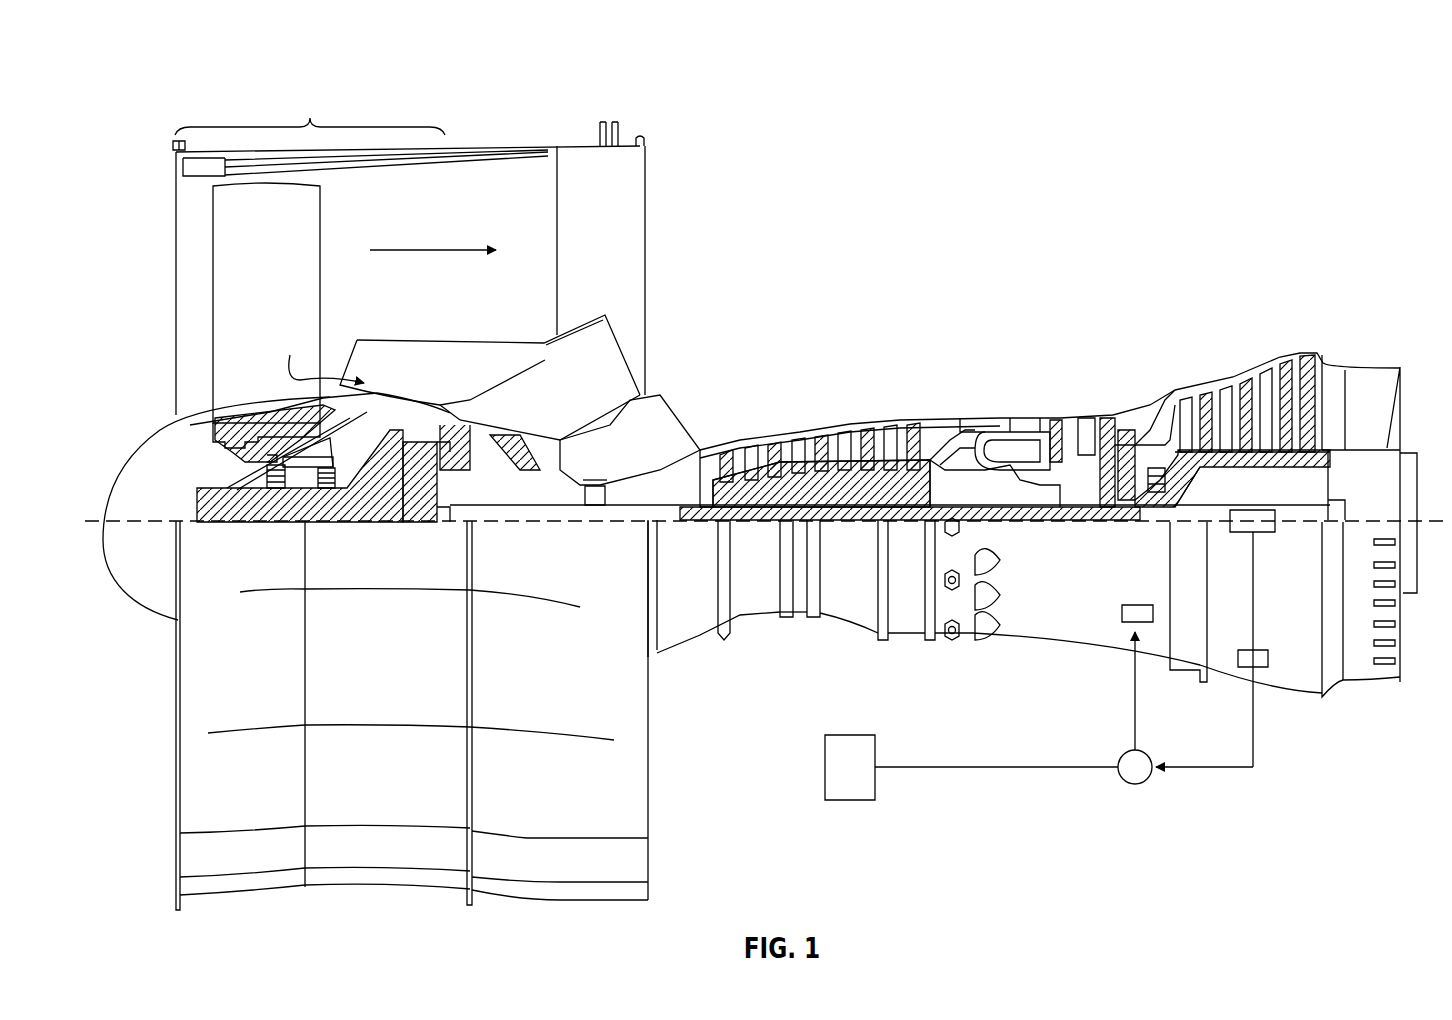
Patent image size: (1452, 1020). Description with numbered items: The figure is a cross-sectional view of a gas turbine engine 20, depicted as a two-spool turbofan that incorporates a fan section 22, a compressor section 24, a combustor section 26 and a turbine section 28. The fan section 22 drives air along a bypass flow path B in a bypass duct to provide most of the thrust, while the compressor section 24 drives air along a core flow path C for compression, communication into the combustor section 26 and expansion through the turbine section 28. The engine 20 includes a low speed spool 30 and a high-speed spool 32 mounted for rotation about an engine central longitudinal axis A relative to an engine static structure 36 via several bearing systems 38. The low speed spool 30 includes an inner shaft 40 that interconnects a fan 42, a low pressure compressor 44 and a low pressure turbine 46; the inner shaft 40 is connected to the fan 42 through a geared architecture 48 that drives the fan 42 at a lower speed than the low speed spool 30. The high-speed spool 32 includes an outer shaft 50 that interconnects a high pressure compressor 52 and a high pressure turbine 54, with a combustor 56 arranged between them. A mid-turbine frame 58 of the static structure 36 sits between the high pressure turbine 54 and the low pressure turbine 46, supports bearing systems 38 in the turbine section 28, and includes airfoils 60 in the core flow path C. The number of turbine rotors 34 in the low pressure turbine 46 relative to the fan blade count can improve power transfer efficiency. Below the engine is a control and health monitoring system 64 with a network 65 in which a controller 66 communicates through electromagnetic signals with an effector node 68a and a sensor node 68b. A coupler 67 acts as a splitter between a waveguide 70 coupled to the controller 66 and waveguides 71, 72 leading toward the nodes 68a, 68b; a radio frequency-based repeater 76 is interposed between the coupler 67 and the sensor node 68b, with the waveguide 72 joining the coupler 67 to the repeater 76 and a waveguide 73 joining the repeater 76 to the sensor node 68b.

The gas turbine engine 20 is at (1224, 186).
The fan section 22 is at (310, 110).
The compressor section 24 is at (842, 382).
The combustor section 26 is at (1005, 328).
The turbine section 28 is at (1176, 328).
The low speed spool 30 is at (870, 528).
The high-speed spool 32 is at (925, 470).
The turbine rotors 34 is at (1200, 469).
The engine static structure 36 is at (908, 642).
The bearing systems 38 is at (273, 484).
The inner shaft 40 is at (663, 512).
The fan 42 is at (292, 276).
The low pressure compressor 44 is at (566, 400).
The low pressure turbine 46 is at (1257, 376).
The geared architecture 48 is at (410, 484).
The outer shaft 50 is at (1040, 500).
The high pressure compressor 52 is at (803, 480).
The high pressure turbine 54 is at (1093, 415).
The combustor 56 is at (1015, 440).
The mid-turbine frame 58 is at (1140, 400).
The airfoils 60 is at (1137, 430).
The control and health monitoring system 64 is at (1176, 808).
The network 65 is at (1321, 790).
The controller 66 is at (832, 753).
The coupler 67 is at (1137, 787).
The effector node 68a is at (1120, 610).
The sensor node 68b is at (1270, 533).
The waveguide 70 is at (942, 767).
The waveguide 71 is at (1133, 702).
The waveguide 72 is at (1257, 750).
The waveguide 73 is at (1255, 602).
The radio frequency-based repeater 76 is at (1263, 668).
The engine central longitudinal axis A is at (1423, 517).
The bypass flow path B is at (440, 248).
The core flow path C is at (320, 350).